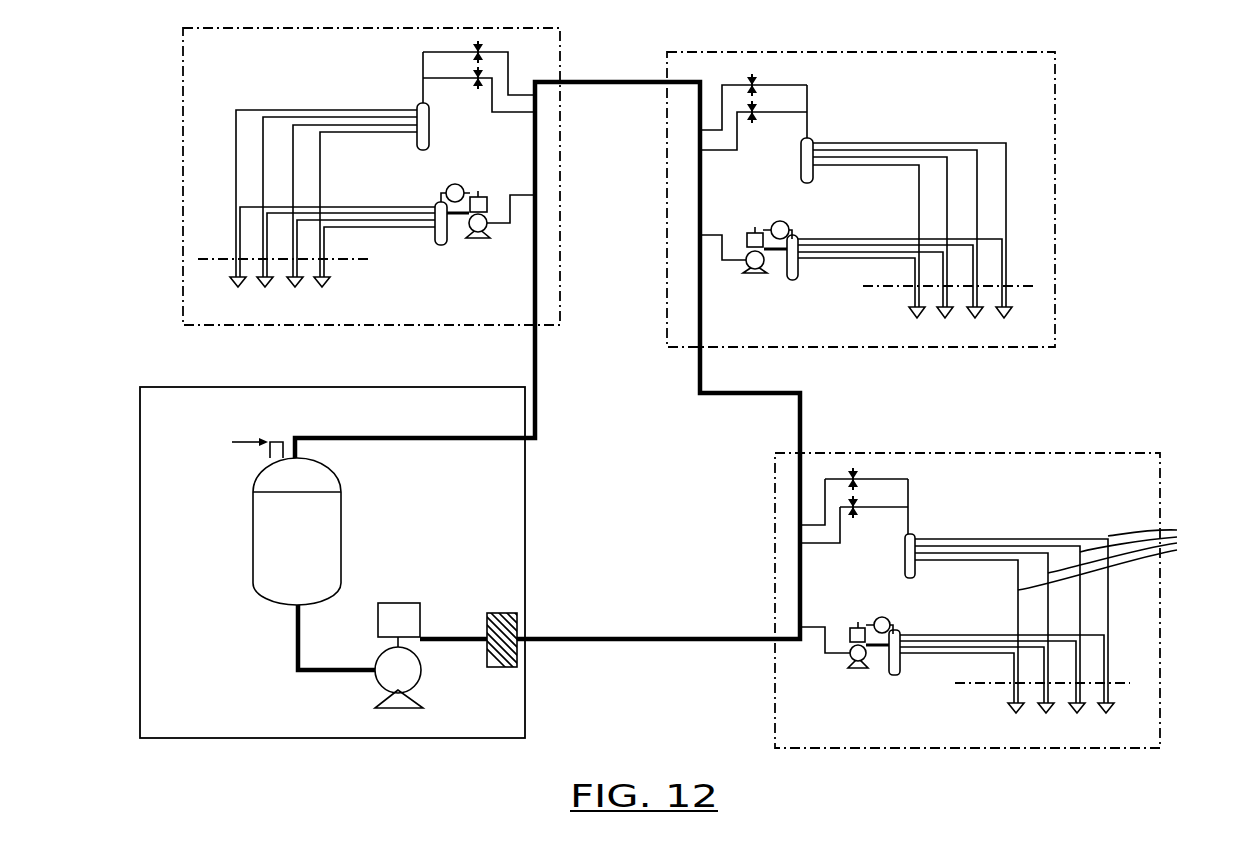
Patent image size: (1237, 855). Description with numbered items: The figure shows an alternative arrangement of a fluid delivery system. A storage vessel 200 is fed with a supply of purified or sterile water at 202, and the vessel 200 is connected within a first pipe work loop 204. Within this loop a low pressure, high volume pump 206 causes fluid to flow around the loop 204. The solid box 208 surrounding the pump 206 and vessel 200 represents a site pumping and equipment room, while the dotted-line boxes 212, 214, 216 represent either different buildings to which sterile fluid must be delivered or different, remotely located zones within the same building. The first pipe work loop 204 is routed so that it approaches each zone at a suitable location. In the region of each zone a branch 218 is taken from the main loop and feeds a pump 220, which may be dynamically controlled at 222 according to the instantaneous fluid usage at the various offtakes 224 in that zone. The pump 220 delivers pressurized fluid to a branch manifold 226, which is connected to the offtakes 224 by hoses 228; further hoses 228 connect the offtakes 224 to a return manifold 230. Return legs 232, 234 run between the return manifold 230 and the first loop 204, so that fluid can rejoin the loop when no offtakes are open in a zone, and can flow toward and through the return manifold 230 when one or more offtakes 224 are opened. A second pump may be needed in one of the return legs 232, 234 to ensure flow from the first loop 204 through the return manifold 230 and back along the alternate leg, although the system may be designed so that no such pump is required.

The storage vessel 200 is at (253, 532).
The water supply 202 is at (277, 442).
The first pipe work loop 204 is at (305, 680).
The low pressure, high volume pump 206 is at (422, 678).
The site pumping and equipment room 208 is at (163, 384).
The zone 212 is at (1105, 452).
The zone 214 is at (1055, 205).
The third dispensing station 216 is at (183, 172).
The branch 218 is at (833, 660).
The pump 220 is at (862, 670).
The dynamic control 222 is at (883, 617).
The offtakes 224 is at (1018, 714).
The branch manifold 226 is at (900, 675).
The hoses 228 is at (935, 612).
The return manifold 230 is at (913, 536).
The return leg 232 is at (908, 479).
The return leg 234 is at (908, 507).